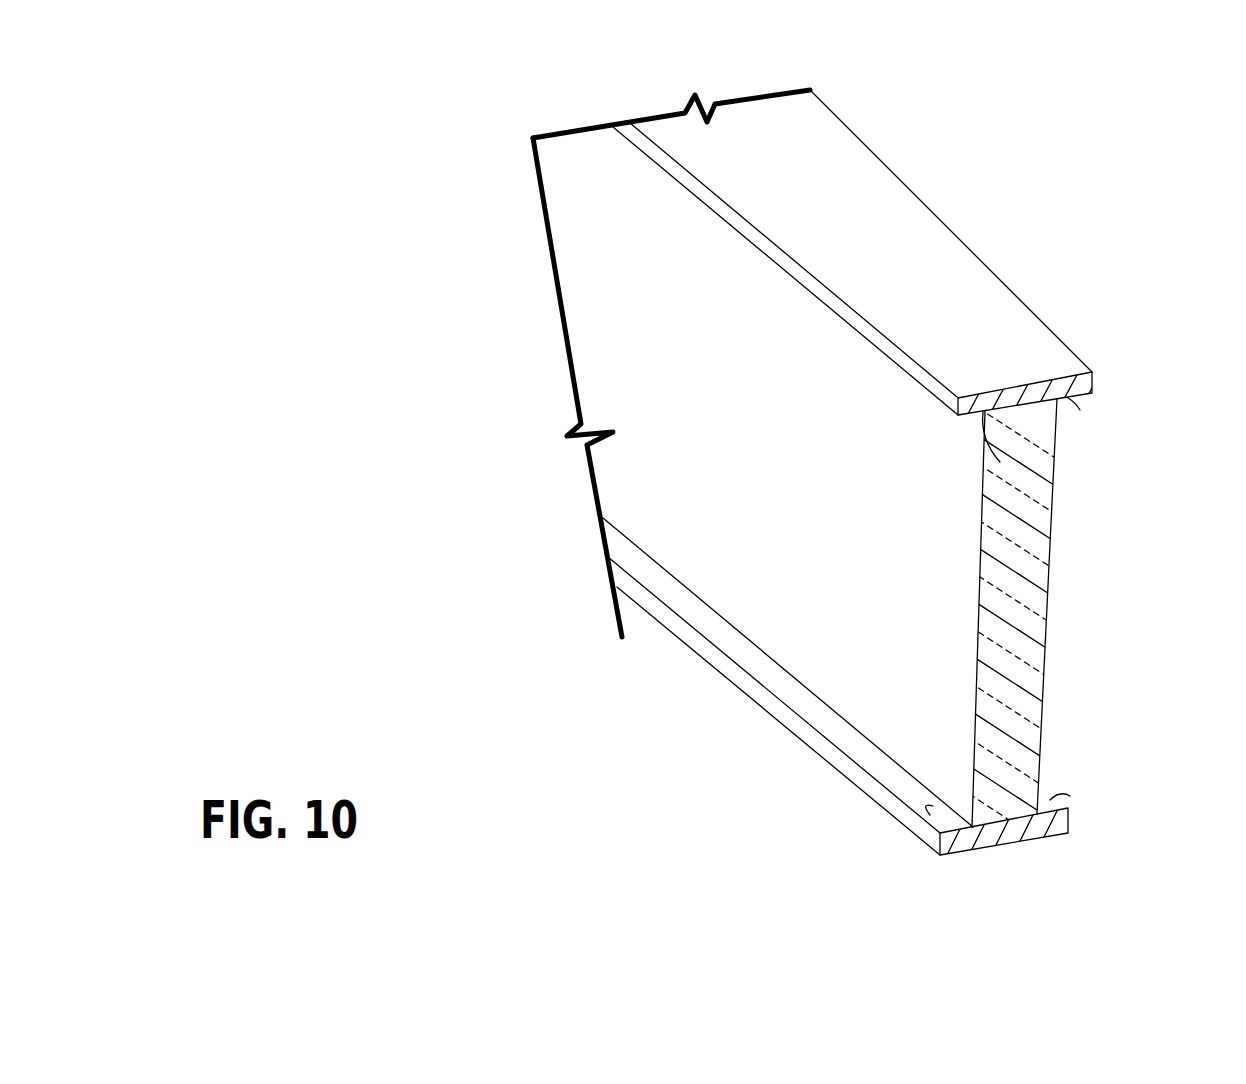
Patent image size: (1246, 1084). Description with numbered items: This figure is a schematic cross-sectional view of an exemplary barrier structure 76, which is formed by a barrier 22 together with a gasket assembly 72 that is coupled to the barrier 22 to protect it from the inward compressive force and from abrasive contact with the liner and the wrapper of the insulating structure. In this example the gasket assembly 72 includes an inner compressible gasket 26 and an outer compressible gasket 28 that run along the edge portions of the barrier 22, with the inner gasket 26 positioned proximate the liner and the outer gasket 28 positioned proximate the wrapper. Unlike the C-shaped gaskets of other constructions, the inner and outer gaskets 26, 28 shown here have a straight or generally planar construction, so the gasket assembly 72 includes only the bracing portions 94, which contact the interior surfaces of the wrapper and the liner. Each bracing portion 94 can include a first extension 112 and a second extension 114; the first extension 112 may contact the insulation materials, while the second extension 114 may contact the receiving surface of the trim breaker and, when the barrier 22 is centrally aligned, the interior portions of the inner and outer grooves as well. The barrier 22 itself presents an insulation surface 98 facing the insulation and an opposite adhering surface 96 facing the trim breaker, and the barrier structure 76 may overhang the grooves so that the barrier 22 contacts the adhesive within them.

The barrier 22 is at (606, 207).
The inner compressible gasket 26 is at (912, 278).
The outer compressible gasket 28 is at (752, 678).
The gasket assembly 72 is at (786, 304).
The barrier structure 76 is at (952, 156).
The bracing portion 94 is at (1020, 405).
The adhering surface 96 is at (1040, 729).
The insulation surface 98 is at (821, 533).
The first extension 112 is at (1000, 462).
The second extension 114 is at (1068, 398).